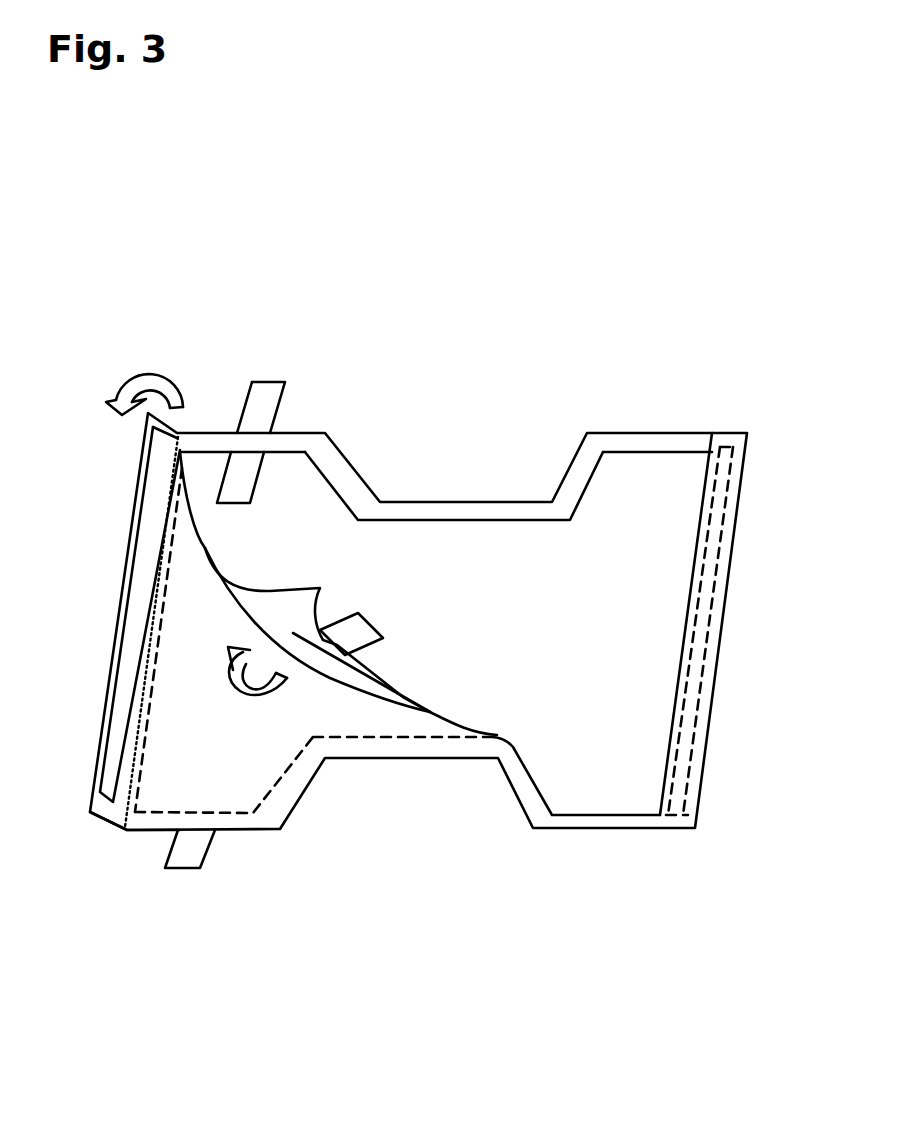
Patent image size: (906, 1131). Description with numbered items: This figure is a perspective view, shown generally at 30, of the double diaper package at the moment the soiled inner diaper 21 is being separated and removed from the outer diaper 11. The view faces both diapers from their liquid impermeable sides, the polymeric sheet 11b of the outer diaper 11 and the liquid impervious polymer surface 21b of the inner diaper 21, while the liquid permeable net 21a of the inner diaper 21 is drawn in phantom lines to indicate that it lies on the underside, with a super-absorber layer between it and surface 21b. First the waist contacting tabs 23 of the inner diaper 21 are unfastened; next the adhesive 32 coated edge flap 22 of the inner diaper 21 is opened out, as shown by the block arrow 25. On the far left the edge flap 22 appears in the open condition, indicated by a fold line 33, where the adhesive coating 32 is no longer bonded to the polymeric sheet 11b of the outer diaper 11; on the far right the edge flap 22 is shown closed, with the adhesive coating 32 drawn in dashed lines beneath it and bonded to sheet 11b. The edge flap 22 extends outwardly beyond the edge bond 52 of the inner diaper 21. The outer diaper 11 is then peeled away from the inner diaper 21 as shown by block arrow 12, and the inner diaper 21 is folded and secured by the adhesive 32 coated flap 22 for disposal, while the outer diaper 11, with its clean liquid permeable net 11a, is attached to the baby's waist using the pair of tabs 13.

The outer diaper 11 is at (641, 484).
The liquid permeable net 11a is at (330, 645).
The liquid impermeable polymeric sheet 11b is at (435, 592).
The block arrow 12 is at (237, 790).
The tabs 13 is at (233, 482).
The inner diaper 21 is at (150, 786).
The liquid permeable net 21a is at (213, 797).
The liquid impervious polymer surface 21b is at (252, 692).
The edge flap 22 is at (133, 507).
The waist contacting tabs 23 is at (268, 398).
The block arrow 25 is at (147, 378).
The double diaper package condition 30 is at (536, 341).
The adhesive coating 32 is at (732, 552).
The fold line 33 is at (150, 637).
The edge bond 52 is at (165, 815).